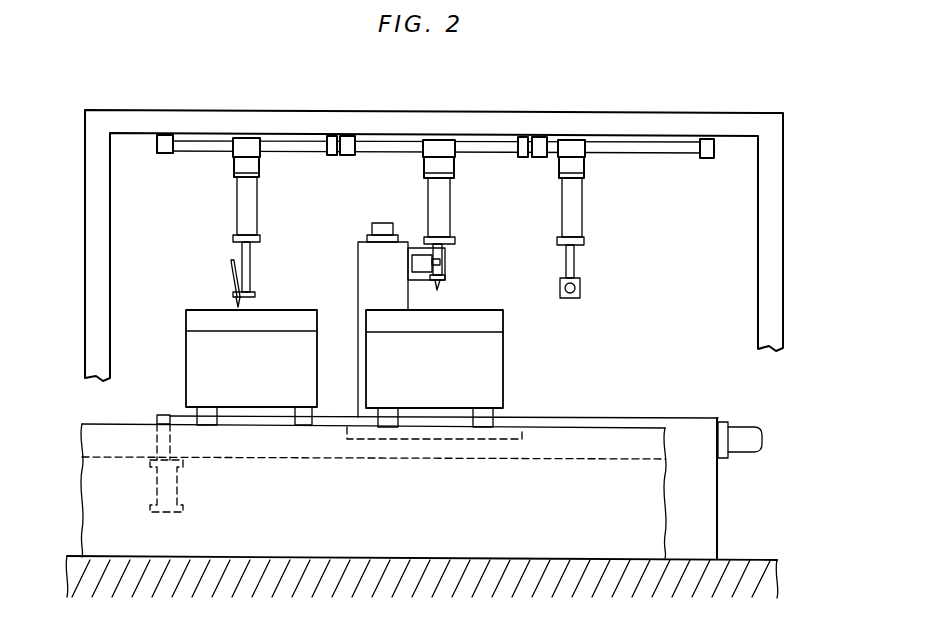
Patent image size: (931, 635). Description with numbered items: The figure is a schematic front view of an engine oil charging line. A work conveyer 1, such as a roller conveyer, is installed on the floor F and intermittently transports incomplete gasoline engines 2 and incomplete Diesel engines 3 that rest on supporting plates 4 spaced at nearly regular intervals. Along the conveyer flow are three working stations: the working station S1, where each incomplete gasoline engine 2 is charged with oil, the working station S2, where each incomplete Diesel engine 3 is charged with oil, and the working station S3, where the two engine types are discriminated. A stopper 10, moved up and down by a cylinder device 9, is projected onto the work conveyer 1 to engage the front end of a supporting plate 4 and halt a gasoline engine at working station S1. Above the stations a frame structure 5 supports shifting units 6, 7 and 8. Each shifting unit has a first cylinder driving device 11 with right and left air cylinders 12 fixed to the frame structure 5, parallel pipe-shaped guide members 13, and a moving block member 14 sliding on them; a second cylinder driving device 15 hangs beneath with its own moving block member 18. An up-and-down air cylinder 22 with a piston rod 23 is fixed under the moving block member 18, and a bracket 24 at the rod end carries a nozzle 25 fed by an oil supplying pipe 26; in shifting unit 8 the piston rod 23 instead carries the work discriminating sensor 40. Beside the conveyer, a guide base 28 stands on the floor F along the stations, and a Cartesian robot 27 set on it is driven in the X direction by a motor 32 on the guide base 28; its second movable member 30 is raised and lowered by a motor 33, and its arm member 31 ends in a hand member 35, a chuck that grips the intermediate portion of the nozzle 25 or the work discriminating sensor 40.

The work conveyer 1 is at (522, 445).
The incomplete gasoline engine 2 is at (196, 312).
The incomplete Diesel engine 3 is at (503, 322).
The supporting plate 4 is at (292, 439).
The frame structure 5 is at (710, 120).
The shifting unit 6 is at (225, 168).
The shifting unit 7 is at (412, 172).
The shifting unit 8 is at (556, 176).
The cylinder device 9 is at (150, 488).
The stopper 10 is at (162, 415).
The first cylinder driving device 11 is at (268, 138).
The air cylinder 12 is at (165, 135).
The pipe-shaped guide member 13 is at (302, 152).
The moving block member 14 is at (246, 138).
The second cylinder driving device 15 is at (259, 166).
The moving block member 18 is at (258, 176).
The air cylinder 22 is at (237, 207).
The piston rod 23 is at (250, 250).
The bracket 24 is at (255, 294).
The nozzle 25 is at (236, 300).
The oil supplying pipe 26 is at (232, 262).
The robot 27 is at (358, 264).
The guide base 28 is at (705, 496).
The second movable member 30 is at (358, 284).
The arm member 31 is at (414, 248).
The motor 32 is at (746, 432).
The motor 33 is at (372, 226).
The hand member 35 is at (412, 263).
The work discriminating sensor 40 is at (580, 288).
The working station S1 is at (318, 400).
The working station S2 is at (510, 402).
The working station S3 is at (626, 402).
The floor F is at (748, 558).